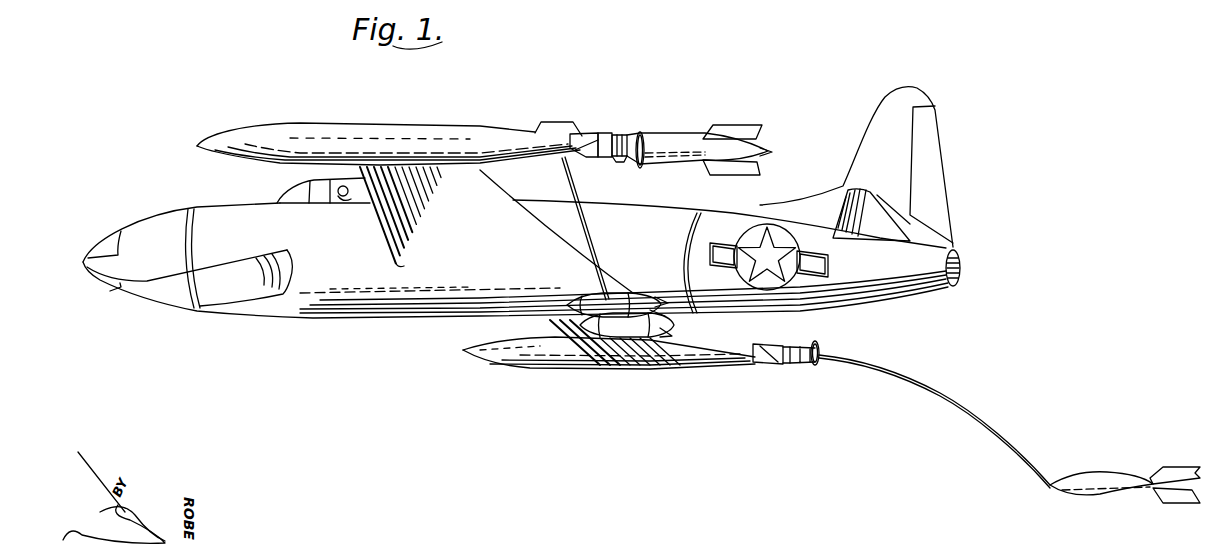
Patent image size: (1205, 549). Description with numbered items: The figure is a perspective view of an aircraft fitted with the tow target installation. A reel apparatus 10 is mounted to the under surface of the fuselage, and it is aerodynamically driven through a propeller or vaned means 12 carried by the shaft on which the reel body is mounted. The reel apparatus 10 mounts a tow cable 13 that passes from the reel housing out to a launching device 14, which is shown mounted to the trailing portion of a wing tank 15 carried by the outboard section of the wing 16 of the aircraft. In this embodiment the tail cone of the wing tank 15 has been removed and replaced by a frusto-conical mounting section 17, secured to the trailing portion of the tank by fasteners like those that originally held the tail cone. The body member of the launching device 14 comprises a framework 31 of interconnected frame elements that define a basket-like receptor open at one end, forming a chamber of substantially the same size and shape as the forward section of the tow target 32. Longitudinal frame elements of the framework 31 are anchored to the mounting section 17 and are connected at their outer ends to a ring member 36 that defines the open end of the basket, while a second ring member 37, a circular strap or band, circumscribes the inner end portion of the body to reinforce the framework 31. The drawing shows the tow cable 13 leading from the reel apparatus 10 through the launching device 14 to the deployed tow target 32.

The reel apparatus 10 is at (576, 291).
The propeller or vaned means 12 is at (648, 300).
The tow cable 13 is at (575, 182).
The launching device 14 is at (617, 142).
The wing tank 15 is at (417, 127).
The wing 16 is at (502, 197).
The frusto-conical mounting section 17 is at (583, 150).
The framework 31 is at (619, 166).
The tow target 32 is at (693, 133).
The ring member 36 is at (644, 133).
The second ring member 37 is at (612, 142).